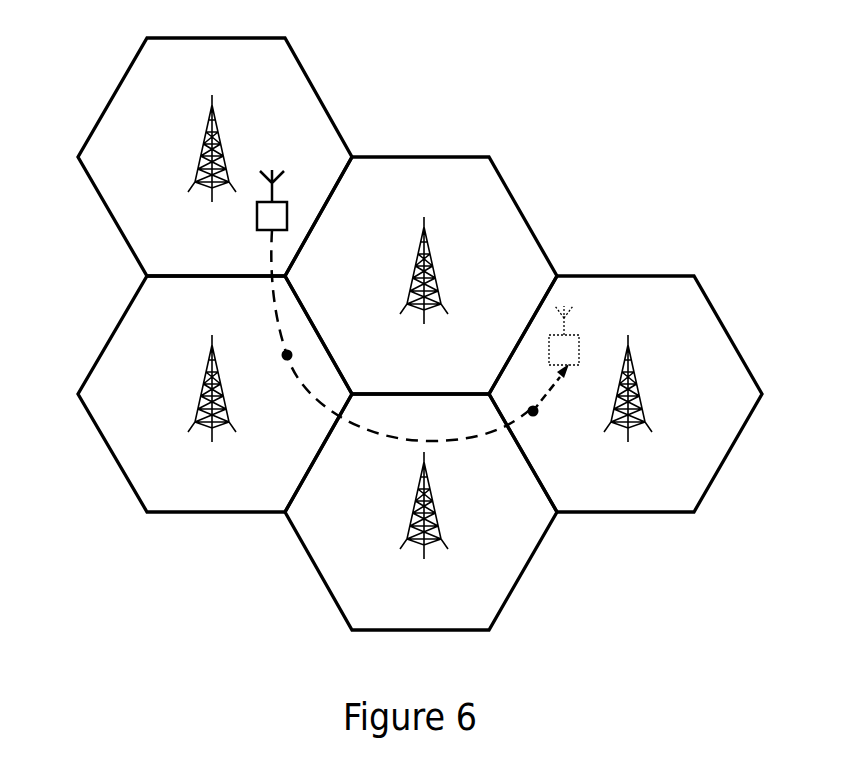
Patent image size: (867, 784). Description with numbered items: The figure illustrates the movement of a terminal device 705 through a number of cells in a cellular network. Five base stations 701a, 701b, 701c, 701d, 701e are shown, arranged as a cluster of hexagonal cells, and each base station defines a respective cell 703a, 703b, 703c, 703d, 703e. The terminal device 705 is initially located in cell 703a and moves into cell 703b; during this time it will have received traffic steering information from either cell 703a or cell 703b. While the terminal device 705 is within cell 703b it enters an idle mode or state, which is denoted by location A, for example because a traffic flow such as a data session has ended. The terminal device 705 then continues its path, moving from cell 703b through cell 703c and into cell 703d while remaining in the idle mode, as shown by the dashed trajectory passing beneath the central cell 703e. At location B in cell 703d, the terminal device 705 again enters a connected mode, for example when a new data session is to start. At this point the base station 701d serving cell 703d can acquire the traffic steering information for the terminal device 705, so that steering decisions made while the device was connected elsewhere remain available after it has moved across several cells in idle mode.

The base station 701a is at (203, 140).
The base station 701b is at (202, 378).
The base station 701c is at (432, 493).
The base station 701d is at (635, 373).
The base station 701e is at (412, 273).
The cell 703a is at (128, 68).
The cell 703b is at (103, 348).
The cell 703c is at (533, 552).
The cell 703d is at (715, 313).
The cell 703e is at (513, 197).
The terminal device 705 is at (257, 224).
The location A is at (277, 364).
The location B is at (543, 423).